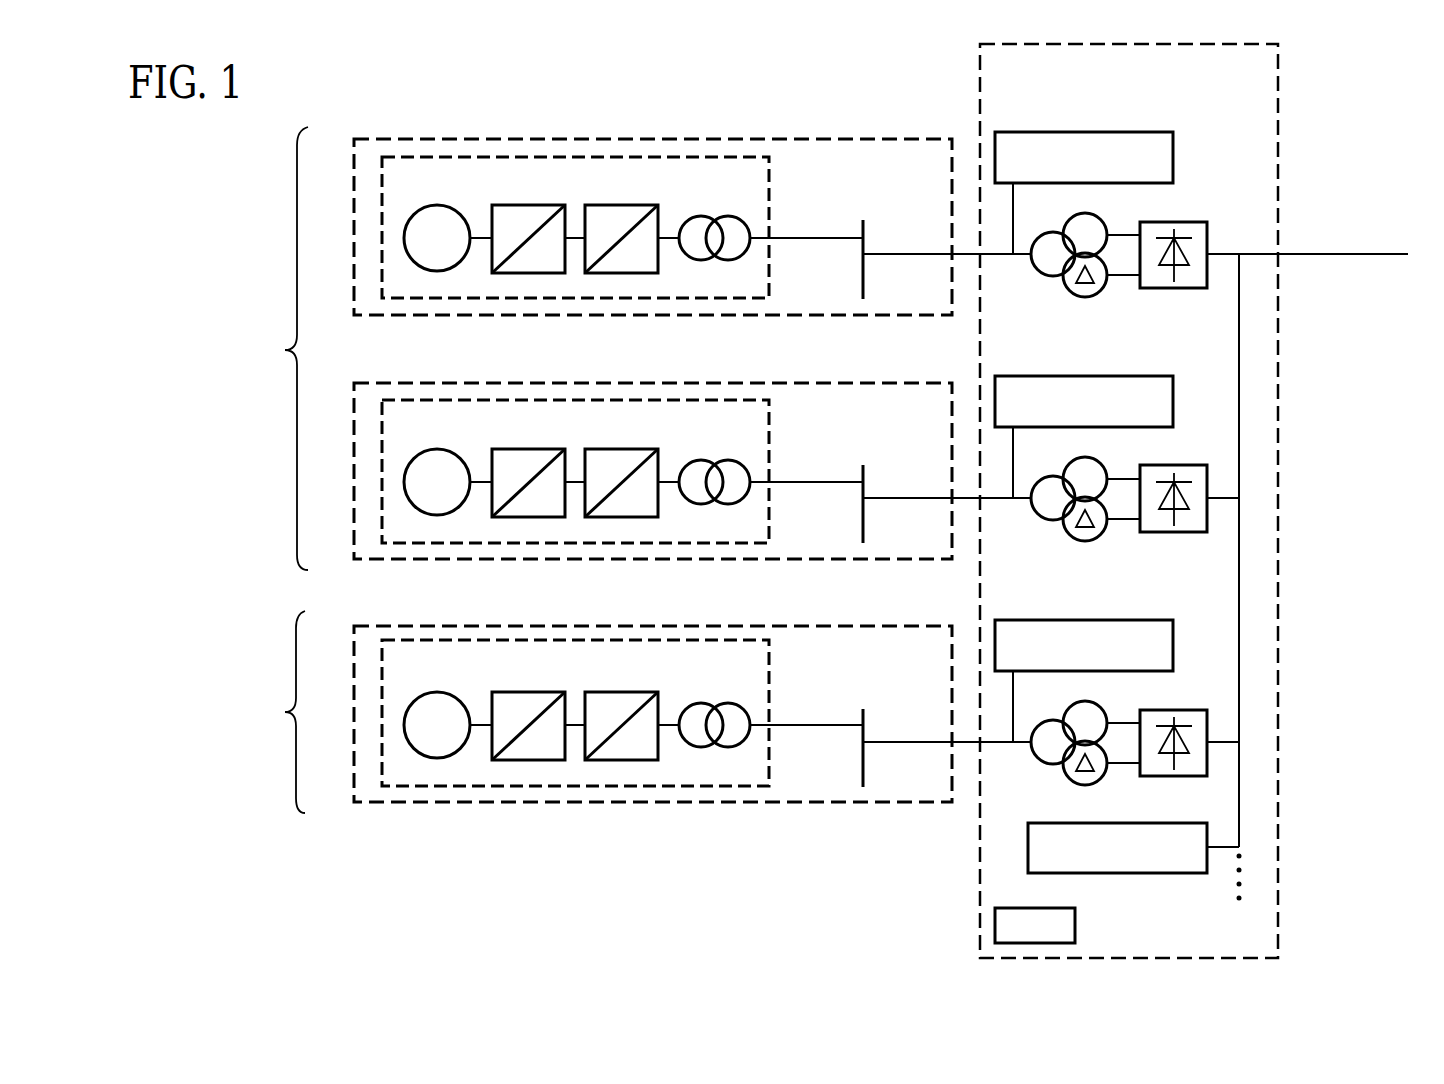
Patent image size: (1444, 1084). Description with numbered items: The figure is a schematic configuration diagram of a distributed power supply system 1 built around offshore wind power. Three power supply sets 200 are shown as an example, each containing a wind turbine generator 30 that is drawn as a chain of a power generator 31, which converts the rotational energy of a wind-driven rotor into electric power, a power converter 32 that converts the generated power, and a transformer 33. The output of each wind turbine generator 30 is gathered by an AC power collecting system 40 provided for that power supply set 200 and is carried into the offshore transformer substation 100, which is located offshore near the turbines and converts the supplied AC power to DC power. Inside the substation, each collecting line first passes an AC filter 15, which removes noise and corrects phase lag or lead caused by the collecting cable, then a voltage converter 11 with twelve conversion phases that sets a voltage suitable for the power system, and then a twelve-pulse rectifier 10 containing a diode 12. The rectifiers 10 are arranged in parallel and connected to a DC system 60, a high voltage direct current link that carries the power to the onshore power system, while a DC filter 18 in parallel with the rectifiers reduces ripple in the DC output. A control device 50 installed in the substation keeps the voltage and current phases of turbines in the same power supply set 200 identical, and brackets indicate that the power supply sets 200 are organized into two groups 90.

The distributed power supply system 1 is at (368, 869).
The power supply set 200 is at (455, 139).
The wind turbine generator 30 is at (693, 157).
The power generator 31 is at (437, 760).
The power converter 32 is at (572, 779).
The transformer 33 is at (727, 749).
The AC power collecting system 40 is at (808, 238).
The group 90 is at (257, 470).
The offshore transformer substation 100 is at (1278, 912).
The AC filter 15 is at (1055, 132).
The voltage converter 11 is at (1083, 300).
The diode 12 is at (1172, 290).
The rectifier 10 is at (1212, 693).
The DC system 60 is at (1350, 258).
The DC filter 18 is at (1180, 873).
The control device 50 is at (1075, 925).